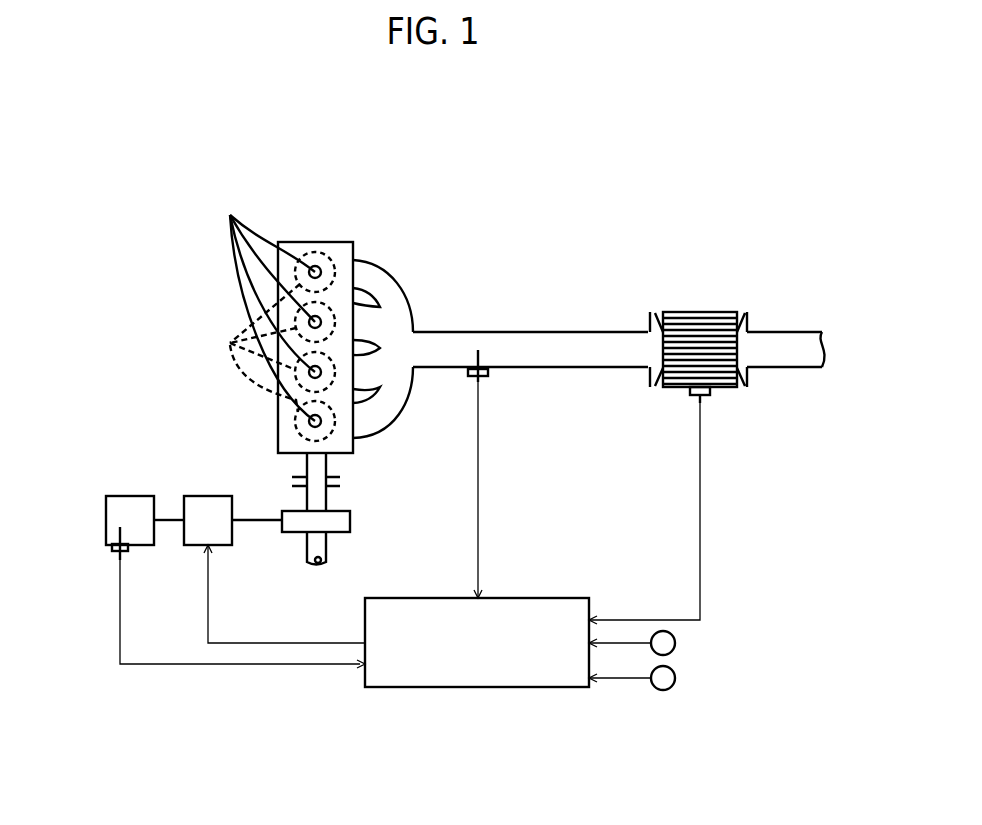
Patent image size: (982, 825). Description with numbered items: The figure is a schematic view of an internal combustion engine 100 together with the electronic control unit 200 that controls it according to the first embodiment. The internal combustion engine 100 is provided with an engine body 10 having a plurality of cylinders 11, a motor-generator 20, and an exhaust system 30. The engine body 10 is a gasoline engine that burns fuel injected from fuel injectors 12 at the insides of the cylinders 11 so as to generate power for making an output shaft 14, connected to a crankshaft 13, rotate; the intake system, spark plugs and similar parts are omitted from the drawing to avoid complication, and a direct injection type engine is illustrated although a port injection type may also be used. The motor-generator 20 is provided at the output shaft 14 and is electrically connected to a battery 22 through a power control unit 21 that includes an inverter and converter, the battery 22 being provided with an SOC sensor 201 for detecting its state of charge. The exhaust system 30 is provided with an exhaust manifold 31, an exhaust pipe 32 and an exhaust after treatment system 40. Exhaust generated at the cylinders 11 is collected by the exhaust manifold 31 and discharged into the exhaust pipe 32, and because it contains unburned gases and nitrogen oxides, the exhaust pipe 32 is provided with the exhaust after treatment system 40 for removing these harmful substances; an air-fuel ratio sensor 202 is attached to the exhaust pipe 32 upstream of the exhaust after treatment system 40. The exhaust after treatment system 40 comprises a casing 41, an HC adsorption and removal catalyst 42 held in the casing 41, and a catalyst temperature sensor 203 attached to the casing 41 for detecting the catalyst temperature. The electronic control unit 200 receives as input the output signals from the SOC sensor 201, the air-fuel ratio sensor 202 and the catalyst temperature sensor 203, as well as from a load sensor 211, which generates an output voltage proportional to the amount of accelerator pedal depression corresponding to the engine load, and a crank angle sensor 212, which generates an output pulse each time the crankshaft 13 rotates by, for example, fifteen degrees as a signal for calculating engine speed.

The internal combustion engine 100 is at (547, 140).
The engine body 10 is at (335, 242).
The cylinders 11 is at (232, 345).
The fuel injectors 12 is at (264, 302).
The crankshaft 13 is at (307, 470).
The output shaft 14 is at (327, 498).
The motor-generator 20 is at (293, 533).
The power control unit 21 is at (218, 545).
The battery 22 is at (140, 545).
The exhaust system 30 is at (584, 233).
The exhaust manifold 31 is at (400, 410).
The exhaust pipe 32 is at (483, 332).
The exhaust after treatment system 40 is at (736, 305).
The casing 41 is at (681, 312).
The HC adsorption and removal catalyst 42 is at (722, 378).
The electronic control unit 200 is at (476, 688).
The SOC sensor 201 is at (112, 550).
The air-fuel ratio sensor 202 is at (490, 374).
The catalyst temperature sensor 203 is at (692, 397).
The load sensor 211 is at (675, 643).
The crank angle sensor 212 is at (672, 688).